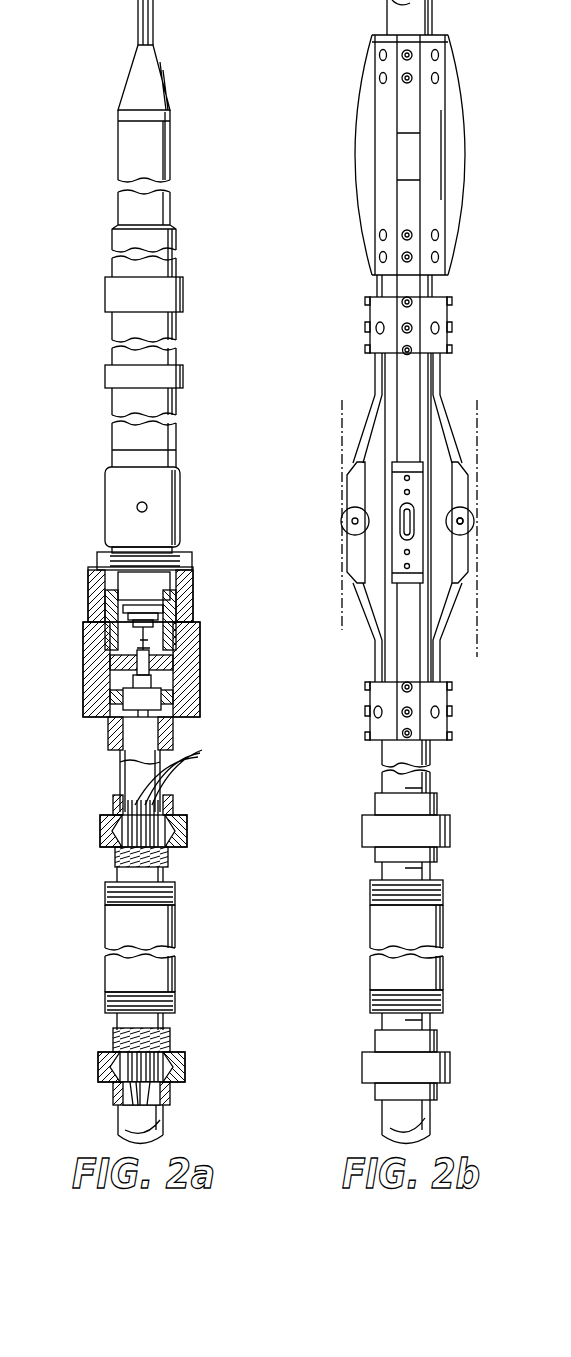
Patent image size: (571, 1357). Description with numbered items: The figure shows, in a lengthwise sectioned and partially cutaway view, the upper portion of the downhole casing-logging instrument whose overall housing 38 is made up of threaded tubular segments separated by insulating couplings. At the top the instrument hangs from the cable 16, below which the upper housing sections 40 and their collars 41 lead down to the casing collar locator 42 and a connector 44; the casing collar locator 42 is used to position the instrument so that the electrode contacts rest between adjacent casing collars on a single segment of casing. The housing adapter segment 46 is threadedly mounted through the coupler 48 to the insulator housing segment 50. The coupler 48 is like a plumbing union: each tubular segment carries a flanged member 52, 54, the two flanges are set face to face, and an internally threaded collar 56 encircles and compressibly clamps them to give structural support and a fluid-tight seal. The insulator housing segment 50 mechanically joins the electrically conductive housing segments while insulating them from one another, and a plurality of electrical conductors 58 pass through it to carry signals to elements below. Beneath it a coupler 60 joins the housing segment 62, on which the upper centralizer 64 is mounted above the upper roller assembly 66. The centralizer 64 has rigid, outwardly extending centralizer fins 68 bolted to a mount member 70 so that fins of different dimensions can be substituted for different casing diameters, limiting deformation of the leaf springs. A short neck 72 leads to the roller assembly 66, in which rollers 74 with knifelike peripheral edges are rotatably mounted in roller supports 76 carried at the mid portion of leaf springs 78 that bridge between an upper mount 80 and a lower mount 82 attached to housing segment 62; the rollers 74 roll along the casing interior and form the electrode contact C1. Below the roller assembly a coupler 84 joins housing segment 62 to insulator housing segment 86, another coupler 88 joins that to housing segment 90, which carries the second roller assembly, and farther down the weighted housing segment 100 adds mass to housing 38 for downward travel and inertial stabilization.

In FIG. 2a, the cable 16 is at (140, 15).
In FIG. 2a, the housing 38 is at (172, 70).
In FIG. 2a, the housing sections 40 is at (120, 268).
In FIG. 2a, the collars 41 is at (123, 357).
In FIG. 2a, the casing collar locator 42 is at (120, 440).
In FIG. 2a, the connector 44 is at (76, 630).
In FIG. 2a, the housing adapter segment 46 is at (118, 782).
In FIG. 2a, the coupler 48 is at (142, 845).
In FIG. 2a, the insulator housing segment 50 is at (112, 975).
In FIG. 2a, the flanged member 52 is at (115, 820).
In FIG. 2a, the flanged member 54 is at (170, 850).
In FIG. 2a, the collar 56 is at (188, 828).
In FIG. 2a, the electrical conductors 58 is at (199, 756).
In FIG. 2a, the coupler 60 is at (90, 1064).
In FIG. 2a, the housing segment 62 is at (118, 1108).
In FIG. 2b, the housing segment 62 is at (420, 20).
In FIG. 2b, the upper centralizer 64 is at (403, 155).
In FIG. 2b, the upper roller assembly 66 is at (420, 517).
In FIG. 2b, the centralizer fins 68 is at (405, 118).
In FIG. 2b, the mount member 70 is at (410, 36).
In FIG. 2b, the neck 72 is at (403, 275).
In FIG. 2b, the rollers 74 is at (345, 518).
In FIG. 2b, the roller support 76 is at (466, 487).
In FIG. 2b, the leaf springs 78 is at (372, 648).
In FIG. 2b, the upper mount 80 is at (432, 307).
In FIG. 2b, the lower mount 82 is at (432, 698).
In FIG. 2b, the coupler 84 is at (350, 838).
In FIG. 2b, the insulator housing segment 86 is at (387, 977).
In FIG. 2b, the coupler 88 is at (350, 1078).
In FIG. 2b, the housing segment 90 is at (395, 1115).
In FIG. 2b, the weighted housing segment 100 is at (553, 940).
In FIG. 2b, the contact C1 is at (490, 517).